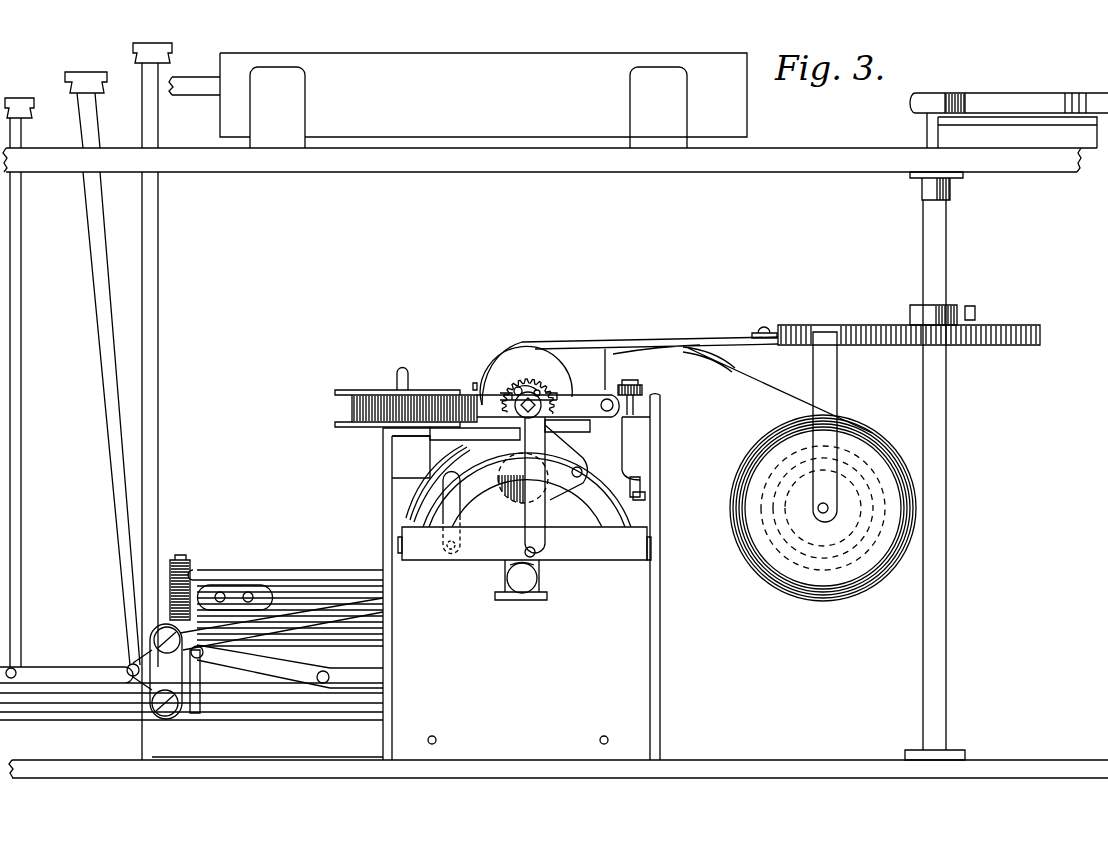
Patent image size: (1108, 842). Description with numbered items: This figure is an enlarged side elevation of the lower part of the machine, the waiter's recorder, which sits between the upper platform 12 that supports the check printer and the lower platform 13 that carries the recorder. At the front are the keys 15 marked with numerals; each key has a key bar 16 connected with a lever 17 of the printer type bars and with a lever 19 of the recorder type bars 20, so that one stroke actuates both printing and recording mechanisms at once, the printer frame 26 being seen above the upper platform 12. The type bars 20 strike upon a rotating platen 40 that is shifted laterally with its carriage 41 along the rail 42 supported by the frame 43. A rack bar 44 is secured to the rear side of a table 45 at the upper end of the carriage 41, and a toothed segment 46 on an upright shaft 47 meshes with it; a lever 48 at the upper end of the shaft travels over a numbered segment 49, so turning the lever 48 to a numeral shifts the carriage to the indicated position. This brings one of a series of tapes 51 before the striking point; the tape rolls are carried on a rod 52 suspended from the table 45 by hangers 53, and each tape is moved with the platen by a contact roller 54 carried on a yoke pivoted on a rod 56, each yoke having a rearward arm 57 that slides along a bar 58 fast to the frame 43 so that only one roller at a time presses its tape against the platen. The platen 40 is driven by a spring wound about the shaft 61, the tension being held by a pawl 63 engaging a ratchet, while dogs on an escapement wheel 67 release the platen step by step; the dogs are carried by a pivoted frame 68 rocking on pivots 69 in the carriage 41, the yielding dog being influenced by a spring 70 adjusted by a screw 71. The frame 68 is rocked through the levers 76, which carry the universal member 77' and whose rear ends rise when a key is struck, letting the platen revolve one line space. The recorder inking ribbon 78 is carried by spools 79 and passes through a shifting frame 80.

The upper platform 12 is at (354, 172).
The lower platform 13 is at (58, 778).
The keys 15 is at (76, 72).
The key bars 16 is at (98, 363).
The levers 17 is at (198, 95).
The levers 19 is at (100, 720).
The type bars 20 is at (238, 580).
The frame 26 is at (747, 100).
The platen 40 is at (506, 366).
The carriage 41 is at (478, 560).
The rail 42 is at (518, 593).
The frame 43 is at (658, 652).
The rack bar 44 is at (762, 333).
The table 45 is at (674, 341).
The toothed segment 46 is at (872, 320).
The upright shaft 47 is at (941, 466).
The lever 48 is at (1022, 88).
The numbered segment 49 is at (1081, 176).
The tapes 51 is at (758, 372).
The rod 52 is at (829, 511).
The hangers 53 is at (838, 398).
The contact roller 54 is at (510, 490).
The rod 56 is at (577, 478).
The arm 57 is at (646, 496).
The bar 58 is at (641, 480).
The shaft 61 is at (540, 412).
The pawl 63 is at (552, 388).
The escapement wheel 67 is at (524, 389).
The pivoted frame 68 is at (445, 540).
The pivots 69 is at (398, 546).
The spring 70 is at (422, 472).
The screw 71 is at (411, 457).
The levers 76 is at (385, 682).
The pivot post 77' is at (176, 685).
The inking ribbon 78 is at (345, 410).
The spools 79 is at (395, 385).
The shifting frame 80 is at (473, 385).